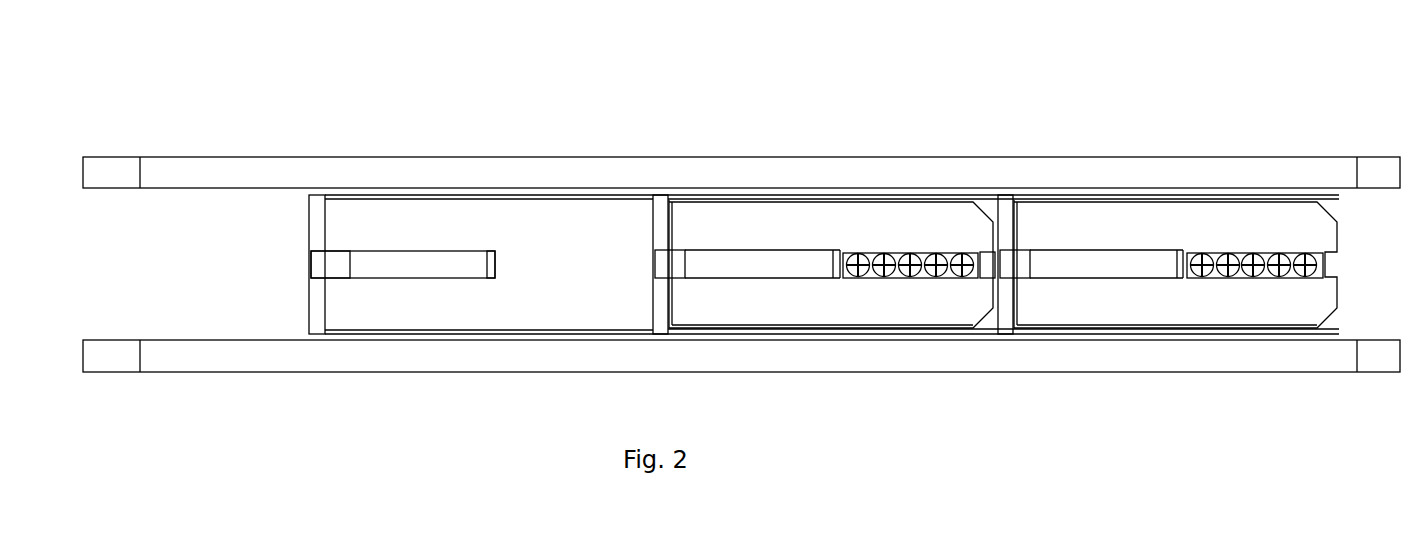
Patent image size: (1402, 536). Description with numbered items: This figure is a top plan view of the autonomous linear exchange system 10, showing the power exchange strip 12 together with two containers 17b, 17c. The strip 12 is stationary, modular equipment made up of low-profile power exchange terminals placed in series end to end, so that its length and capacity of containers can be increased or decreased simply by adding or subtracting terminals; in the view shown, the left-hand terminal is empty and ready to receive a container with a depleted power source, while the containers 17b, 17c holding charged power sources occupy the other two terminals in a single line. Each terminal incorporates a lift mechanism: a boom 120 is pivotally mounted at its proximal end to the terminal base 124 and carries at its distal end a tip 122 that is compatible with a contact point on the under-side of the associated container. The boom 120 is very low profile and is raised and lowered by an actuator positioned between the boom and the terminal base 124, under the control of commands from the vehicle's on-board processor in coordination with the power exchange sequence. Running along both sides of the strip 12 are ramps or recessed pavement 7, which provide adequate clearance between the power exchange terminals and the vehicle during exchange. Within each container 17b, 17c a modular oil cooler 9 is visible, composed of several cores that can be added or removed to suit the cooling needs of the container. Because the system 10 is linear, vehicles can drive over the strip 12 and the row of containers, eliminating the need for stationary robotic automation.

The autonomous linear exchange system 10 is at (150, 124).
The ramps or recessed pavement 7 is at (257, 173).
The strip 12 is at (1317, 91).
The boom 120 is at (406, 263).
The tip 122 is at (492, 262).
The terminal base 124 is at (318, 263).
The container 17b is at (795, 237).
The container 17c is at (1110, 234).
The oil cooler 9 is at (1255, 250).